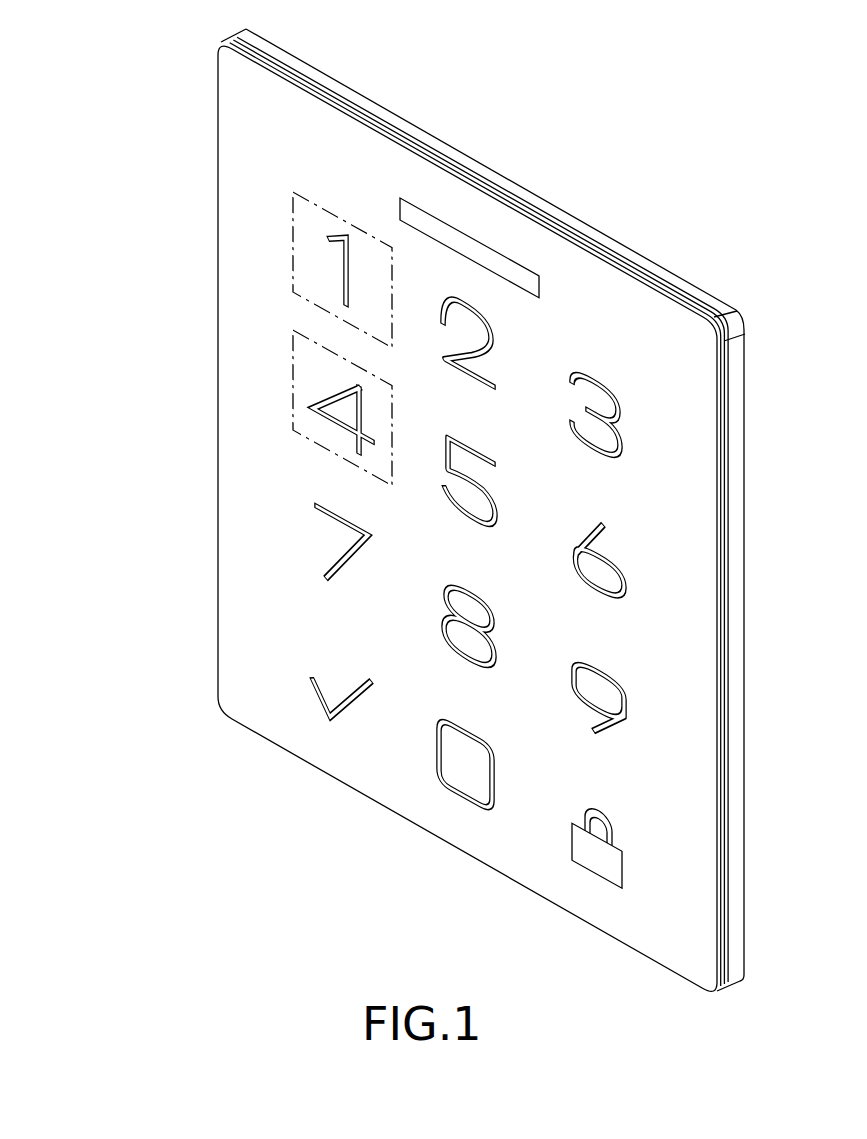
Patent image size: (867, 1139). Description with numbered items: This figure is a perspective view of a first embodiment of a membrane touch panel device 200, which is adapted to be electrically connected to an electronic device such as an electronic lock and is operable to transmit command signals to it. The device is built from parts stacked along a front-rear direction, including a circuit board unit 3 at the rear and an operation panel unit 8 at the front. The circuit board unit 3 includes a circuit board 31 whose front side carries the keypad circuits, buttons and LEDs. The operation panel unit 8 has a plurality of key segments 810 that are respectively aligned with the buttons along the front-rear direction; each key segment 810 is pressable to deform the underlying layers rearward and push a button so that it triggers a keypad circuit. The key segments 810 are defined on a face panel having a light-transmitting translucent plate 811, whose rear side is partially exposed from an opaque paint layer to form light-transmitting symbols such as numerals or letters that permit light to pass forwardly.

The membrane touch panel device 200 is at (187, 96).
The circuit board unit 3 is at (333, 72).
The circuit board 31 is at (435, 145).
The operation panel unit 8 is at (376, 467).
The key segments 810 is at (307, 360).
The translucent plate 811 is at (233, 522).